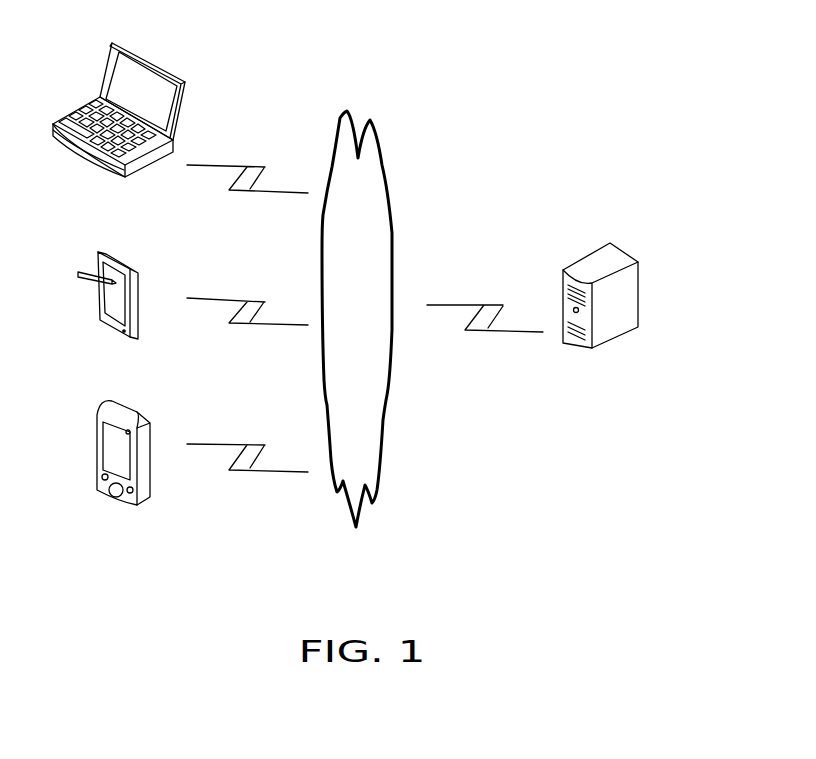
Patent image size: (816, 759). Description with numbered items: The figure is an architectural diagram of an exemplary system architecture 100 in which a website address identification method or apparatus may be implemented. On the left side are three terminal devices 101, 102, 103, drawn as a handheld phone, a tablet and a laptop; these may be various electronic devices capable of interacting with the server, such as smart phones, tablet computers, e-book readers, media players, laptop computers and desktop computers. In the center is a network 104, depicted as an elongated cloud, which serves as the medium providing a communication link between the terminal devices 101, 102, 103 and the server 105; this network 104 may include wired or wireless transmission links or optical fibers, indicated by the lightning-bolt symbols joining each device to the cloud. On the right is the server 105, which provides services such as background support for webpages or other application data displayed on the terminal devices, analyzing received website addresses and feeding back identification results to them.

The system architecture 100 is at (566, 34).
The terminal device 101 is at (123, 469).
The terminal device 102 is at (108, 310).
The terminal device 103 is at (119, 125).
The network 104 is at (357, 319).
The server 105 is at (600, 312).